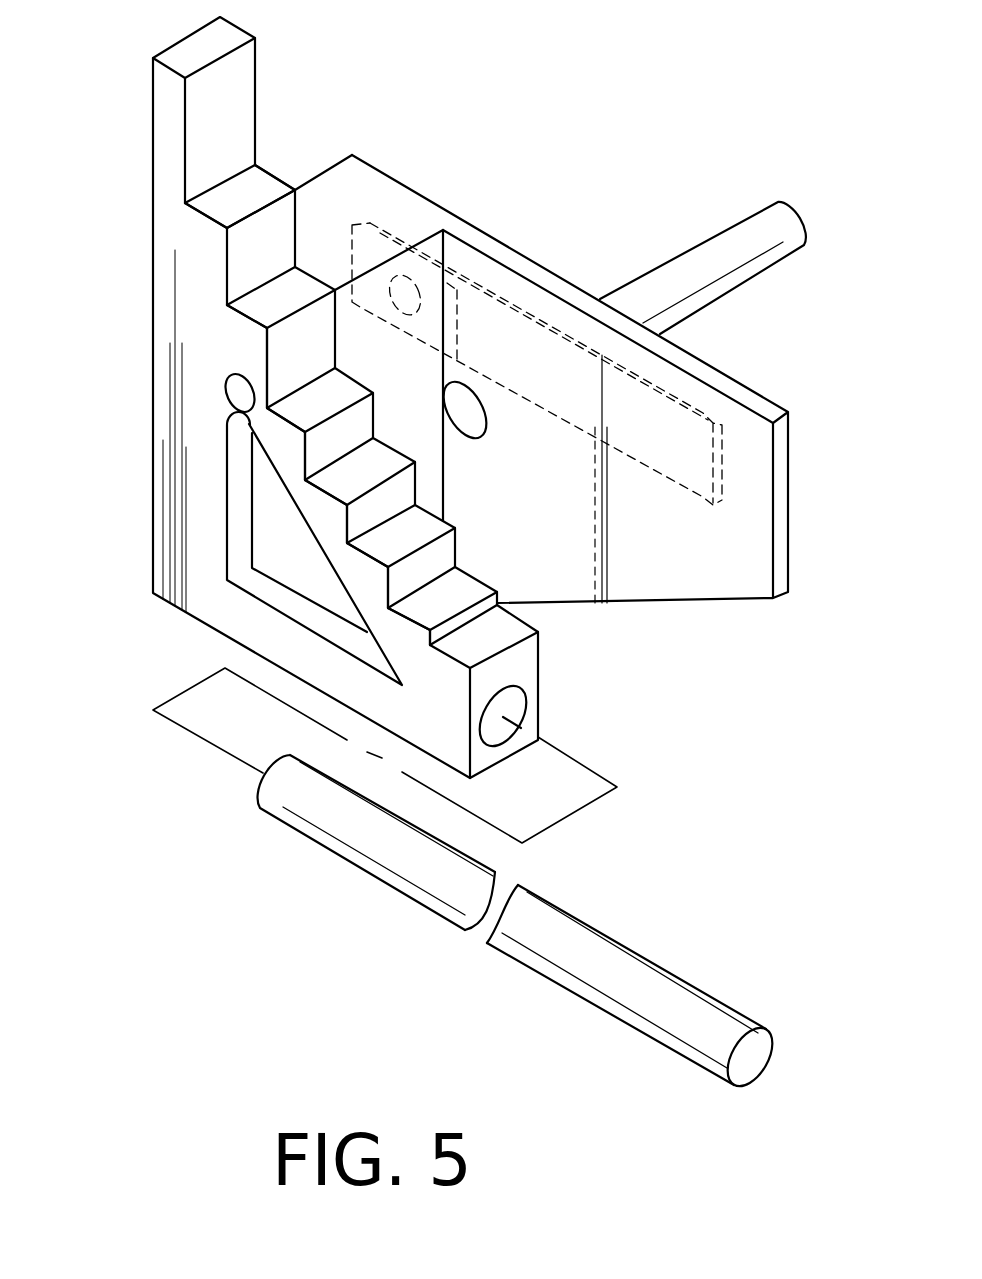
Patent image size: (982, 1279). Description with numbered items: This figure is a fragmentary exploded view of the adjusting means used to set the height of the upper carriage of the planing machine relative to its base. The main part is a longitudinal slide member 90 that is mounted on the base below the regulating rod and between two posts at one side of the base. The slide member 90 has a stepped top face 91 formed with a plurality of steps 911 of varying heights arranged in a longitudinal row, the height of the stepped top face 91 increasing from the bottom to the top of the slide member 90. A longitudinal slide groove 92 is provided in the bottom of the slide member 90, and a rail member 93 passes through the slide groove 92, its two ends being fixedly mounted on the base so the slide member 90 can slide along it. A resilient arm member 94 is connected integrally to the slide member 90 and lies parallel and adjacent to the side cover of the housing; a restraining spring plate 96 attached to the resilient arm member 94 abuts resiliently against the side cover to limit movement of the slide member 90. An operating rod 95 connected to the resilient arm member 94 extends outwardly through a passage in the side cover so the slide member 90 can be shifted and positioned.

The slide member 90 is at (266, 60).
The stepped top face 91 is at (214, 207).
The steps 911 is at (262, 306).
The slide groove 92 is at (500, 708).
The rail member 93 is at (556, 932).
The resilient arm member 94 is at (763, 450).
The operating rod 95 is at (724, 250).
The restraining spring plate 96 is at (710, 395).